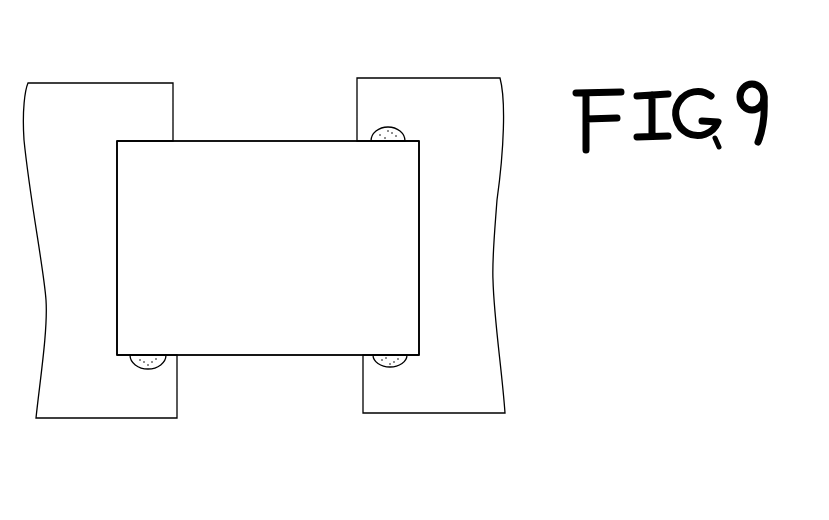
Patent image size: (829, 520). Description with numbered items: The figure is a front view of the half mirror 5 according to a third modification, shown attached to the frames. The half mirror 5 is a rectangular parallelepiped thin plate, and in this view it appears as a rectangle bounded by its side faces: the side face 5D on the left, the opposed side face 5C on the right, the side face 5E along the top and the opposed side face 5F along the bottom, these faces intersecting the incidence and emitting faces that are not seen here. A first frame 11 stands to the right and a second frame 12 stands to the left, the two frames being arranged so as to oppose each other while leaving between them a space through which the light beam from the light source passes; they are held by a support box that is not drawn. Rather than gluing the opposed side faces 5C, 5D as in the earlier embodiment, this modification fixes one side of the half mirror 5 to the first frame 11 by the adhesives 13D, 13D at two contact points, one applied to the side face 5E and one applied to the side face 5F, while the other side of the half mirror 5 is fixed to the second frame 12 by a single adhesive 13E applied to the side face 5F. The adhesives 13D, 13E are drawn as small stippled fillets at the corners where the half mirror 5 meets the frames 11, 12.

The half mirror 5 is at (225, 320).
The side face 5C is at (419, 252).
The side face 5D is at (117, 192).
The side face 5E is at (272, 140).
The side face 5F is at (283, 357).
The first frame 11 is at (455, 83).
The second frame 12 is at (138, 85).
The adhesive 13D is at (388, 126).
The adhesive 13E is at (147, 370).